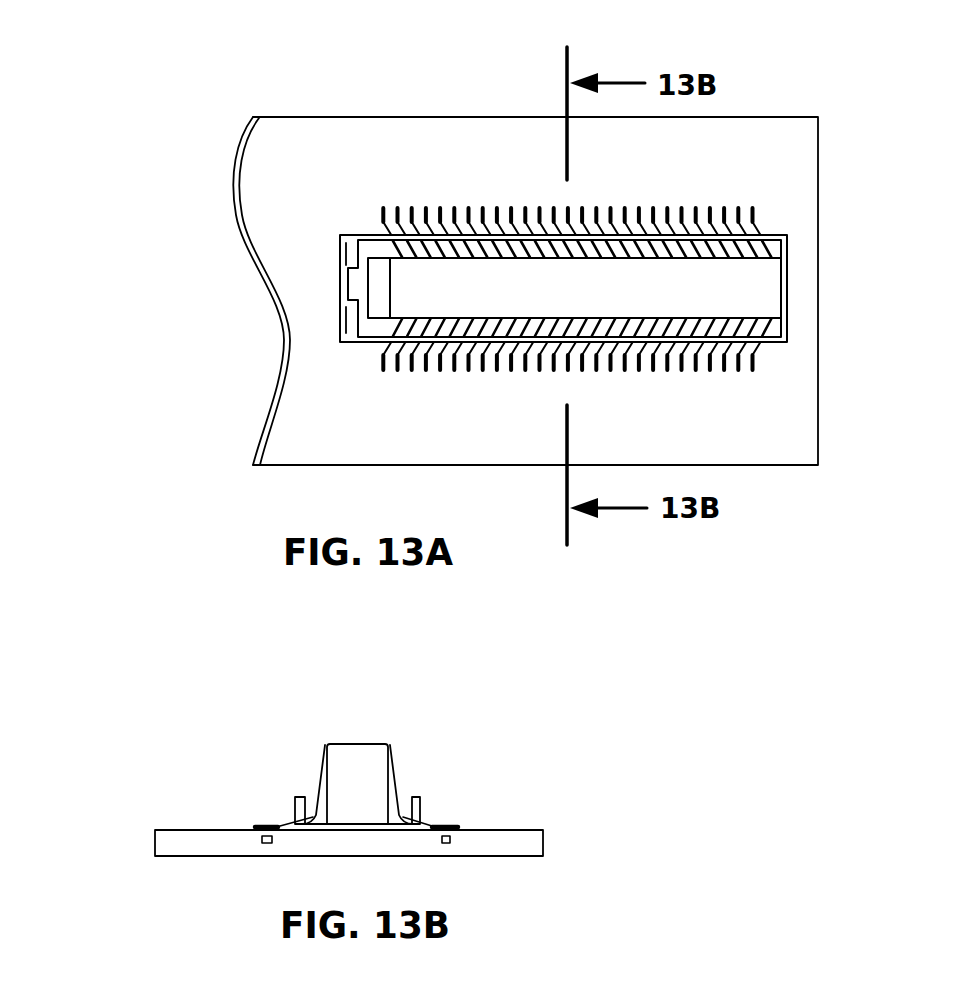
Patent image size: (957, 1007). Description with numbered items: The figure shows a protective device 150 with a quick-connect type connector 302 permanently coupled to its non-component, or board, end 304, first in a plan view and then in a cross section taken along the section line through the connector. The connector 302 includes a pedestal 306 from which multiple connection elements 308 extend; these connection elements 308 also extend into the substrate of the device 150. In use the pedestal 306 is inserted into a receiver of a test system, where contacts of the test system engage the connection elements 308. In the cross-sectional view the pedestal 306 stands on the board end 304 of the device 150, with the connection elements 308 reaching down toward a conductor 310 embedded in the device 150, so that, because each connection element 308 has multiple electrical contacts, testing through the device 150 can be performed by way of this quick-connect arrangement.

In FIG. 13A, the device 150 is at (175, 125).
In FIG. 13B, the device 150 is at (585, 813).
In FIG. 13A, the quick-connect type connector 302 is at (360, 236).
In FIG. 13B, the quick-connect type connector 302 is at (292, 771).
In FIG. 13A, the non-component (board) end 304 is at (787, 118).
In FIG. 13A, the pedestal 306 is at (772, 273).
In FIG. 13B, the pedestal 306 is at (368, 744).
In FIG. 13A, the connection elements 308 is at (383, 352).
In FIG. 13B, the connection elements 308 is at (443, 826).
In FIG. 13B, the conductor 310 is at (455, 840).